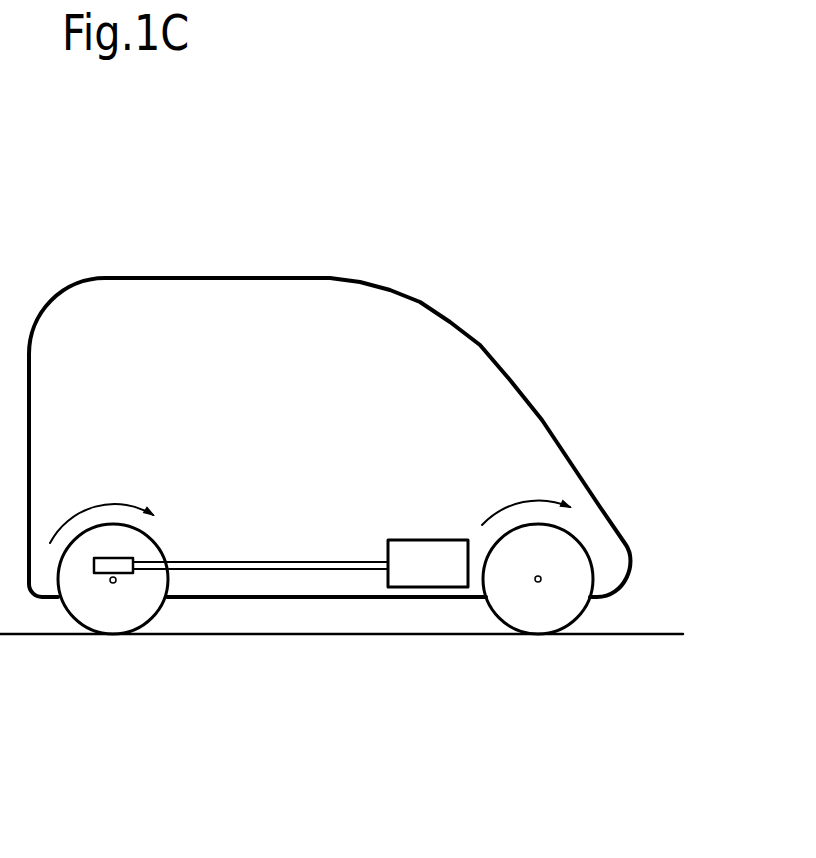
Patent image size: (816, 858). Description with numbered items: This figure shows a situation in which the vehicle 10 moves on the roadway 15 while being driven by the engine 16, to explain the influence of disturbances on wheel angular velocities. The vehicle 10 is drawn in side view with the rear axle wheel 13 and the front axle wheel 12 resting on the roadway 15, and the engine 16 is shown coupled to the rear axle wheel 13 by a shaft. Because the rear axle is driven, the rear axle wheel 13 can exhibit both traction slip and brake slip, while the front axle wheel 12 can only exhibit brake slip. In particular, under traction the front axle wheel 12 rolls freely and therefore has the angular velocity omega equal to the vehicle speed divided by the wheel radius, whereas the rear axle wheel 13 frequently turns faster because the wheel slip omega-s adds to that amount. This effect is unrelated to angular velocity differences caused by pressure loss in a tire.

The vehicle 10 is at (537, 330).
The front axle wheel 12 is at (573, 673).
The rear axle wheel 13 is at (136, 673).
The roadway 15 is at (297, 673).
The engine 16 is at (430, 673).